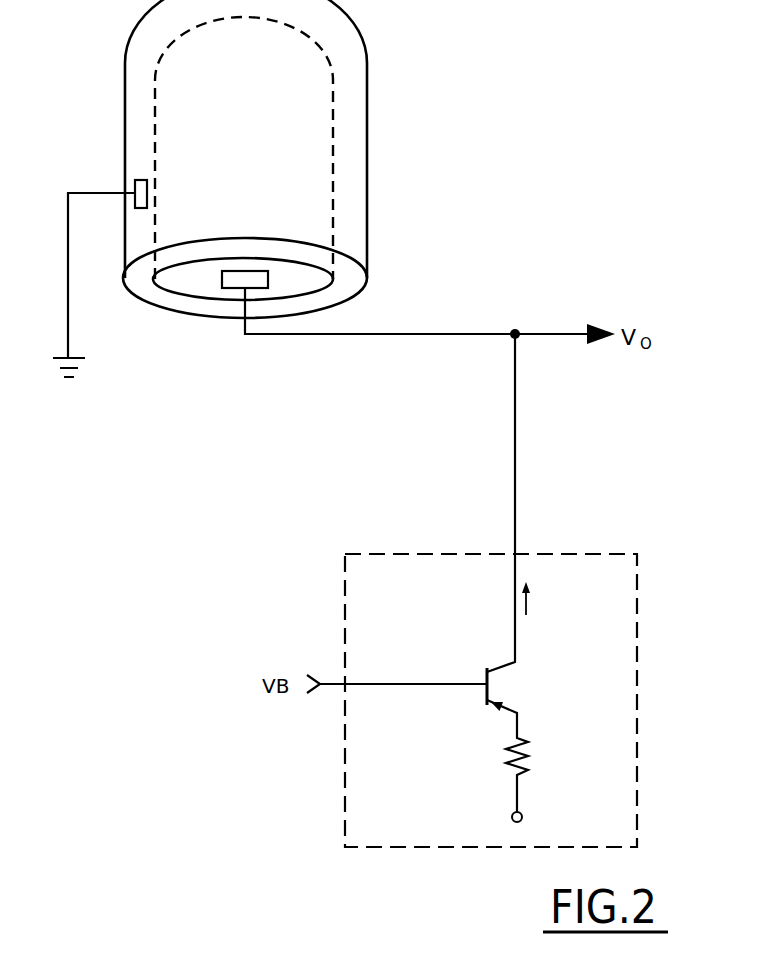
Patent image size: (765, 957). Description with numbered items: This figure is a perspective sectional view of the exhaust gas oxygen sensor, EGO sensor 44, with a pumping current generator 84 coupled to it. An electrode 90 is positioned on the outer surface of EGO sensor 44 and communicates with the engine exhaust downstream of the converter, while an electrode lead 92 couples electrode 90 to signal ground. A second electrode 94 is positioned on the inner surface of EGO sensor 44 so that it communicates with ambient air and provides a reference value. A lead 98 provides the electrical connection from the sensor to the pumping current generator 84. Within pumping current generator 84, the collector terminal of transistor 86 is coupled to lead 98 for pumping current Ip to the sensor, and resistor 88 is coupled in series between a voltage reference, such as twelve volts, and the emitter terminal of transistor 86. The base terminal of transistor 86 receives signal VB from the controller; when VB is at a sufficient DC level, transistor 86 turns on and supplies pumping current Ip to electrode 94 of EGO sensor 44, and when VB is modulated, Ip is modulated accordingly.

The EGO sensor 44 is at (286, 183).
The electrode 90 is at (365, 162).
The electrode lead 92 is at (148, 180).
The second electrode 94 is at (197, 286).
The lead 98 is at (248, 268).
The pumping current generator 84 is at (637, 630).
The transistor 86 is at (536, 654).
The resistor 88 is at (528, 750).